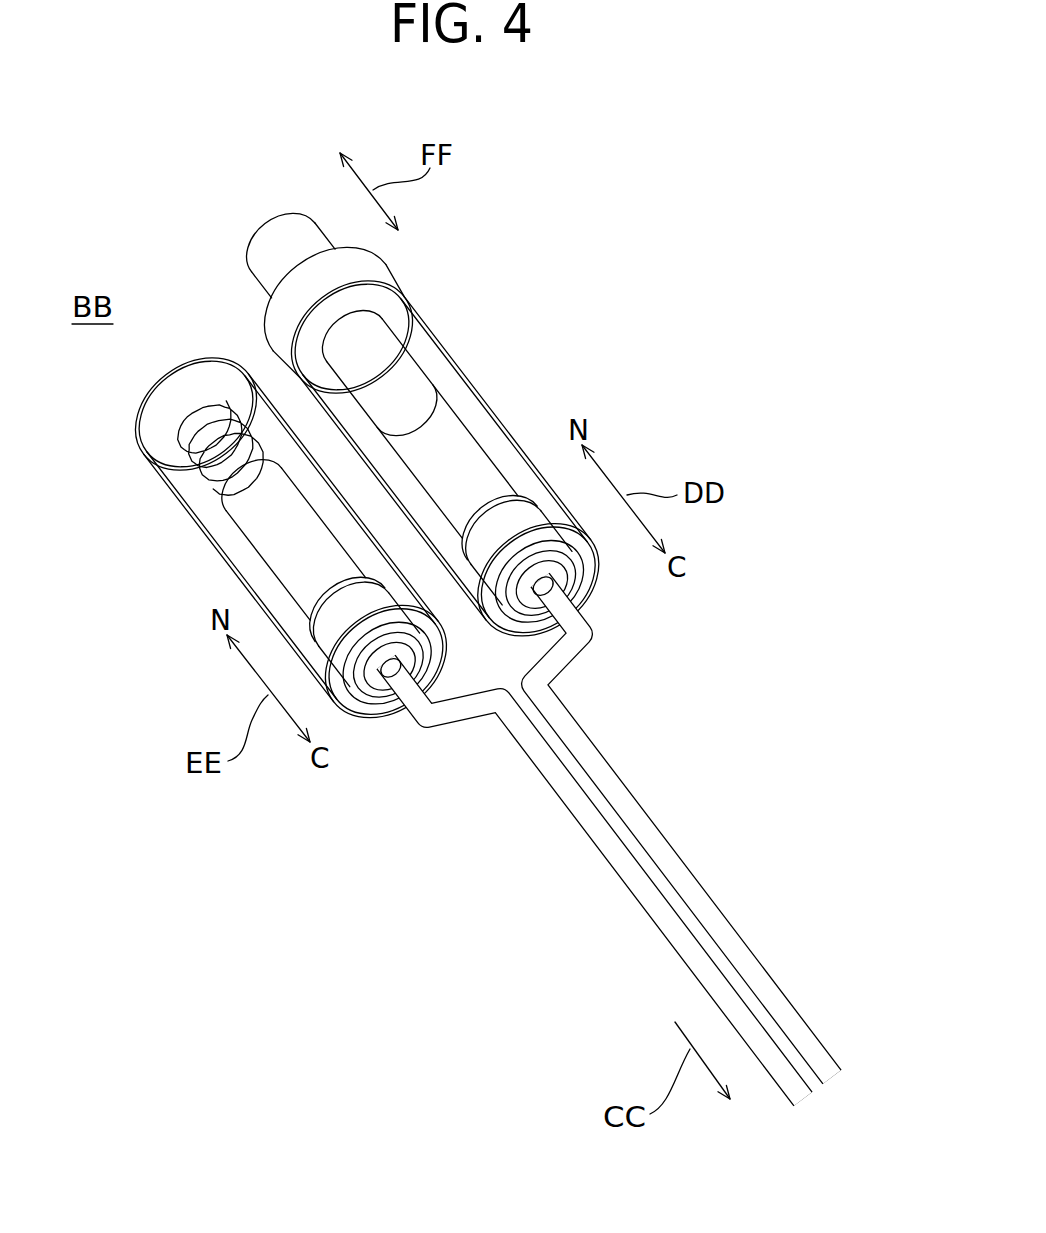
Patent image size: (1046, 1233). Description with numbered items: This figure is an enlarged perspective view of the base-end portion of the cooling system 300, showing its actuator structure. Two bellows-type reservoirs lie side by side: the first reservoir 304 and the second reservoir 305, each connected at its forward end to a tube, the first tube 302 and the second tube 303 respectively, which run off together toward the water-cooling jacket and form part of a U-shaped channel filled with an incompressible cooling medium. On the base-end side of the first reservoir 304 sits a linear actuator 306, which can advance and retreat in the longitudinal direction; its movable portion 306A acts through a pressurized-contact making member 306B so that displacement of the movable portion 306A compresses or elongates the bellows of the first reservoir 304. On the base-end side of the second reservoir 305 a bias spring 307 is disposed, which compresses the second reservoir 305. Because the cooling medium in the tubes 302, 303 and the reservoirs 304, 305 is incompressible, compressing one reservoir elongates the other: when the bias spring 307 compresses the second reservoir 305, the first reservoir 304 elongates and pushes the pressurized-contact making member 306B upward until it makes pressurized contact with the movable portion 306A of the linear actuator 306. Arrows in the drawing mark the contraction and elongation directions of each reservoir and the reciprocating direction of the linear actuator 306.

The cooling system 300 is at (471, 624).
The first tube 302 is at (605, 775).
The second tube 303 is at (562, 916).
The first reservoir 304 is at (540, 543).
The second reservoir 305 is at (350, 667).
The linear actuator 306 is at (480, 236).
The movable portion 306A is at (266, 236).
The pressurized-contact making member 306B is at (444, 432).
The bias spring 307 is at (198, 497).